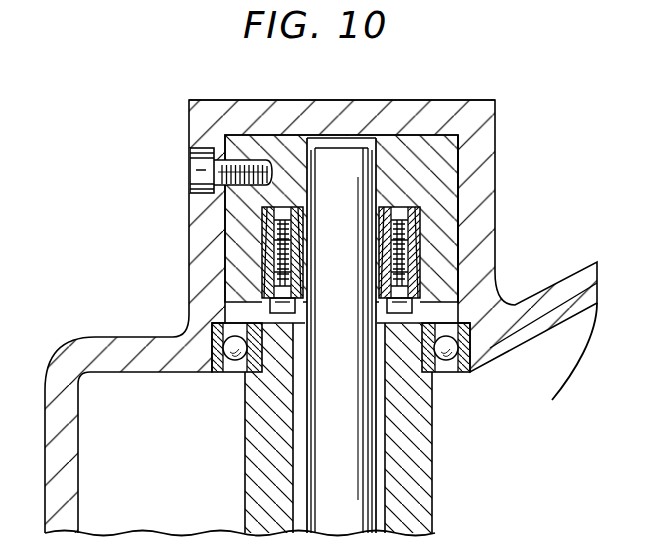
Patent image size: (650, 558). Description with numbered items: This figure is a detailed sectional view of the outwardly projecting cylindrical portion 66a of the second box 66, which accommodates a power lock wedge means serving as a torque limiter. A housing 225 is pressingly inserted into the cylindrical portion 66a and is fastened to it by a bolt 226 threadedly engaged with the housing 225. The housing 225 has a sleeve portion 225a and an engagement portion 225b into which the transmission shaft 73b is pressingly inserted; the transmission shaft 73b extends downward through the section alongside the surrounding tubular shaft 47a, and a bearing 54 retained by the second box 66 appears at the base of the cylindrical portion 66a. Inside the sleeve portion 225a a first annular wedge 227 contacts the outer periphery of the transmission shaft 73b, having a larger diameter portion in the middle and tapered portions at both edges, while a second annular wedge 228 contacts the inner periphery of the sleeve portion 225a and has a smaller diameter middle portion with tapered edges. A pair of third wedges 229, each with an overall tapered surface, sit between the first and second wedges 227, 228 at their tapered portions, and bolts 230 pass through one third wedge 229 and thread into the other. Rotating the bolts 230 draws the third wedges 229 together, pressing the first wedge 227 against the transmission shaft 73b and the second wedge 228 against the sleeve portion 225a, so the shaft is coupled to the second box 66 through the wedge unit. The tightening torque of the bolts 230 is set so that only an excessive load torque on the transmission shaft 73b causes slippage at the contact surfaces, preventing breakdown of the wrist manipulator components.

The second box 66 is at (73, 348).
The cylindrical portion 66a is at (490, 118).
The housing 225 is at (463, 176).
The sleeve portion 225a is at (465, 245).
The engagement portion 225b is at (373, 161).
The bolt 226 is at (190, 164).
The first annular wedge 227 is at (272, 268).
The second annular wedge 228 is at (272, 247).
The third wedges 229 is at (262, 214).
The bolts 230 is at (270, 307).
The bearing 54 is at (456, 350).
The tubular shaft 47a is at (433, 462).
The transmission shaft 73b is at (322, 472).